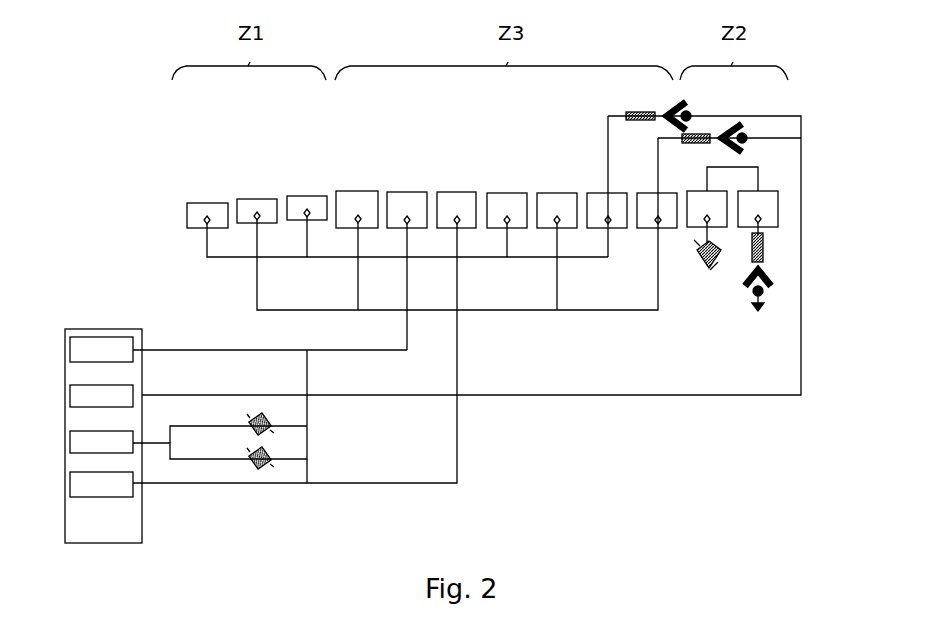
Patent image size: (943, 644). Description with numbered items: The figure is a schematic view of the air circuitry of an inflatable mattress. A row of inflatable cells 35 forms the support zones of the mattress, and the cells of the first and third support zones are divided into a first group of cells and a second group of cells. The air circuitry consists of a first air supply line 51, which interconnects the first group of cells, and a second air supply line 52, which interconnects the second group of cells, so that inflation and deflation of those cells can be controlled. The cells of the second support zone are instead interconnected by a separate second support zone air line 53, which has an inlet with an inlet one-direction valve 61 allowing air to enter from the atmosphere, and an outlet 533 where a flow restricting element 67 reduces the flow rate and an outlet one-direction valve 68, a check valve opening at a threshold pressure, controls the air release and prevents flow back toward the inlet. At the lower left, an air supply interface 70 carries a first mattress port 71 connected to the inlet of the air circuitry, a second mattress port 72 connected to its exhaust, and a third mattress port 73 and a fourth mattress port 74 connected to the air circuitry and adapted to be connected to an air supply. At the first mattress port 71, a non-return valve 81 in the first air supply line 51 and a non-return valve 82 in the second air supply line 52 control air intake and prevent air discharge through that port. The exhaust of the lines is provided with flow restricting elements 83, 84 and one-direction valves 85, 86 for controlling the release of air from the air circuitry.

The inflatable cells 35 is at (258, 180).
The first air supply line 51 is at (413, 353).
The second air supply line 52 is at (630, 323).
The second support zone air line 53 is at (770, 165).
The inlet one-direction valve 61 is at (699, 270).
The flow restricting element 67 is at (766, 243).
The outlet 533 is at (763, 262).
The outlet one-direction valve 68 is at (770, 282).
The air supply interface 70 is at (143, 531).
The first mattress port 71 is at (70, 446).
The second mattress port 72 is at (70, 396).
The third mattress port 73 is at (86, 330).
The fourth mattress port 74 is at (72, 490).
The non-return valve 81 is at (251, 437).
The non-return valve 82 is at (265, 468).
The flow restricting element 83 is at (626, 113).
The flow restricting element 84 is at (698, 133).
The one-direction valve 85 is at (668, 112).
The one-direction valve 86 is at (736, 121).